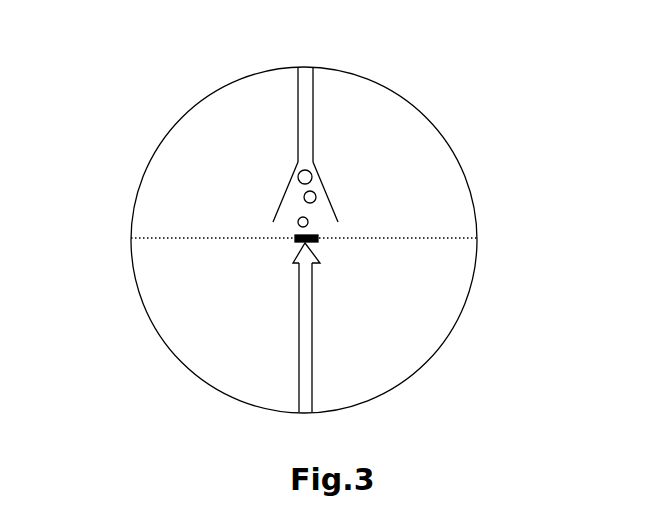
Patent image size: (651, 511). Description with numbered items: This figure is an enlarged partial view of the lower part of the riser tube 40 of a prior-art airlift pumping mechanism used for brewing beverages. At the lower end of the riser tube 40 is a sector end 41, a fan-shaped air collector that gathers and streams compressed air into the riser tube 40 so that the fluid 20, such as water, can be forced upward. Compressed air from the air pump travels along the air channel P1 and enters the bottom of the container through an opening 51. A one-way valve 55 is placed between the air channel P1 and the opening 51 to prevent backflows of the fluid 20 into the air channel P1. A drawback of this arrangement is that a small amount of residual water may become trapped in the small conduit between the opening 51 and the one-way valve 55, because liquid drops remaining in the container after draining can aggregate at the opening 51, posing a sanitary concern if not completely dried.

The fluid 20 is at (415, 120).
The riser tube 40 is at (183, 114).
The sector end 41 is at (430, 183).
The one-way valve 55 is at (441, 220).
The opening 51 is at (182, 327).
The air channel P1 is at (312, 313).